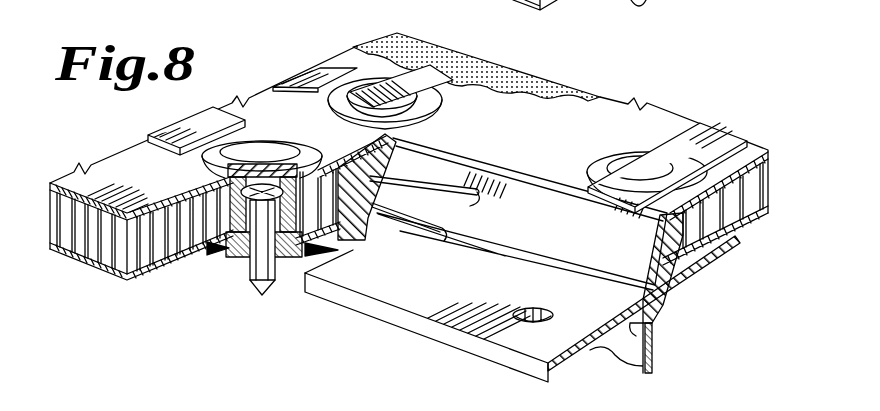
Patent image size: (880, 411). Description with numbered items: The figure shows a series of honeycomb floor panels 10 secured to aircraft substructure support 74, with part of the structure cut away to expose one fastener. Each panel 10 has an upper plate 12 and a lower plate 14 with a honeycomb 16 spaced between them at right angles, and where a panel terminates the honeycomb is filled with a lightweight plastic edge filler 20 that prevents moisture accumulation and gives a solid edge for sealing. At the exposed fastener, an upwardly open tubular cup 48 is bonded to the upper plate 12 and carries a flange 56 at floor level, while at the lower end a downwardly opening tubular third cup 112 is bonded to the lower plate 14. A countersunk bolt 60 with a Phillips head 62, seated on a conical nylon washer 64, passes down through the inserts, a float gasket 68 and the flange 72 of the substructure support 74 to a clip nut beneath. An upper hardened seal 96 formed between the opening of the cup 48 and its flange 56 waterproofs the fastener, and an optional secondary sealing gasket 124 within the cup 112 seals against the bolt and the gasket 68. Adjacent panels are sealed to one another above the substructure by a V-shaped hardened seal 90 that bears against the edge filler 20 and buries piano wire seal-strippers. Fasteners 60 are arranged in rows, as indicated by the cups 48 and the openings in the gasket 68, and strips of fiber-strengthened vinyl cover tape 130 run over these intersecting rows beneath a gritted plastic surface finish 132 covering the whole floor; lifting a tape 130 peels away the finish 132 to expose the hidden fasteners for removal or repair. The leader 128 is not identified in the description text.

The honeycomb floor panel 10 is at (145, 278).
The upper plate 12 is at (121, 178).
The lower plate 14 is at (113, 278).
The honeycomb 16 is at (62, 220).
The edge filler 20 is at (556, 228).
The tubular cup 48 is at (454, 138).
The flange 56 is at (363, 120).
The bolt 60 is at (260, 285).
The Phillips head 62 is at (248, 258).
The nylon washer 64 is at (236, 188).
The float gasket 68 is at (447, 325).
The flange 72 is at (575, 360).
The substructure support 74 is at (656, 348).
The hardened seal 90 is at (378, 219).
The upper hardened seal 96 is at (443, 93).
The tubular third cup 112 is at (217, 249).
The secondary sealing gasket 124 is at (297, 256).
The second wire 128 is at (468, 233).
The fiber-strengthened vinyl cover tape 130 is at (439, 107).
The gritted plastic surface finish 132 is at (563, 78).